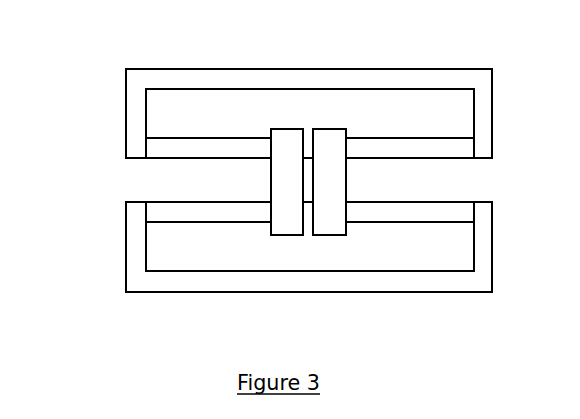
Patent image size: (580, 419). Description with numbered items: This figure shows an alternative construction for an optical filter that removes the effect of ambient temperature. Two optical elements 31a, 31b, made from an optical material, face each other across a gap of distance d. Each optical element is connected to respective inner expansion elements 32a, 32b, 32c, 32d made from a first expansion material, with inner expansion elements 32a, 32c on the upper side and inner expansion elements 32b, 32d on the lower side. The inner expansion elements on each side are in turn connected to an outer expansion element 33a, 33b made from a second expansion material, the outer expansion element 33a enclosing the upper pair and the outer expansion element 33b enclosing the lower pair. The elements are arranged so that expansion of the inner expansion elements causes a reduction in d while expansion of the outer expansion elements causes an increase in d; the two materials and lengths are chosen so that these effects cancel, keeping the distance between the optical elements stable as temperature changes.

The optical element 31a is at (287, 128).
The optical element 31b is at (329, 128).
The inner expansion element 32a is at (199, 138).
The inner expansion element 32b is at (195, 202).
The inner expansion element 32c is at (418, 138).
The inner expansion element 32d is at (420, 202).
The outer expansion element 33a is at (205, 70).
The outer expansion element 33b is at (287, 292).